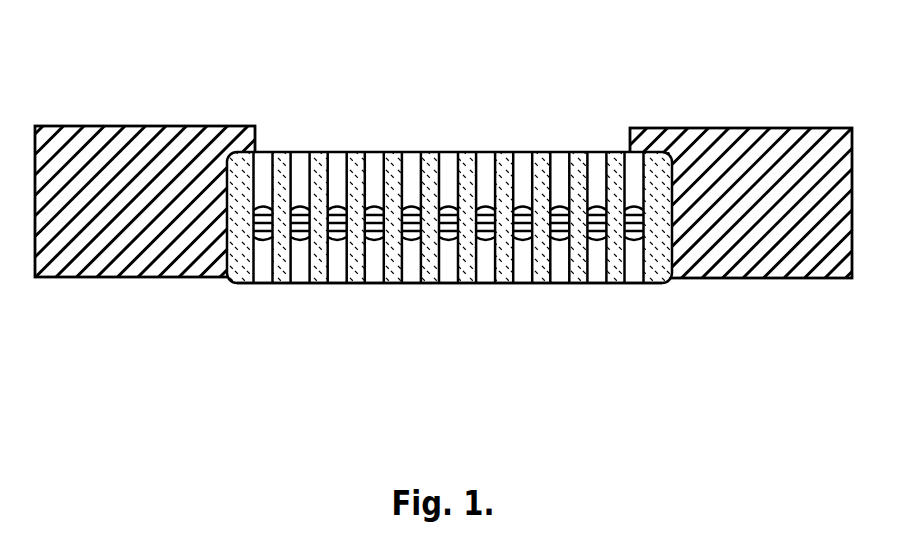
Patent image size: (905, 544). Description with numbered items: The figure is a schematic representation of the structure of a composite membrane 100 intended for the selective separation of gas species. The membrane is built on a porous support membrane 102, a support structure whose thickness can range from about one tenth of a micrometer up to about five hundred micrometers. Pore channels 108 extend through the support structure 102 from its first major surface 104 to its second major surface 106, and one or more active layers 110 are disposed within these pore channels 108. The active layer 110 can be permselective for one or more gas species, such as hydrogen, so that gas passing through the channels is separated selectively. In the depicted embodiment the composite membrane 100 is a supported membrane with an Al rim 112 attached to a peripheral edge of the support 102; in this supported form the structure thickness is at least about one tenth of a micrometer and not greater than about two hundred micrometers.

The composite membrane 100 is at (565, 103).
The porous support membrane 102 is at (285, 163).
The first major surface 104 is at (357, 150).
The second major surface 106 is at (358, 285).
The pore channels 108 is at (450, 163).
The active layer 110 is at (525, 227).
The Al rim 112 is at (753, 140).